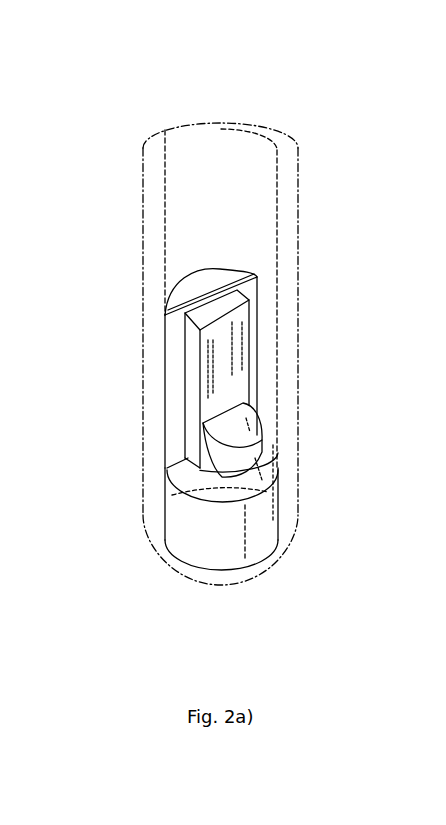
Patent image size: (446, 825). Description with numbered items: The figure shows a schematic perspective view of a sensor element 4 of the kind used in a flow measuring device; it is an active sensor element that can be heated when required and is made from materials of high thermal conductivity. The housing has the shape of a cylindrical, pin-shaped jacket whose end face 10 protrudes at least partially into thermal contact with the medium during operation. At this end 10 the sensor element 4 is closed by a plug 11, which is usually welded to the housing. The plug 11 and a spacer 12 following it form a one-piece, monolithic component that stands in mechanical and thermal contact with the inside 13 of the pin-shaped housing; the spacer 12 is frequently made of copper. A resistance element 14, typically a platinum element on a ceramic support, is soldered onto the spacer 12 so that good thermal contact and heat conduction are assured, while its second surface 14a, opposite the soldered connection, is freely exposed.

The sensor element 4 is at (107, 88).
The end face 10 is at (221, 575).
The plug 11 is at (192, 540).
The spacer 12 is at (176, 385).
The inside of the pin-shaped housing 13 is at (176, 235).
The resistance element 14 is at (219, 374).
The second surface of the resistance element 14a is at (237, 330).